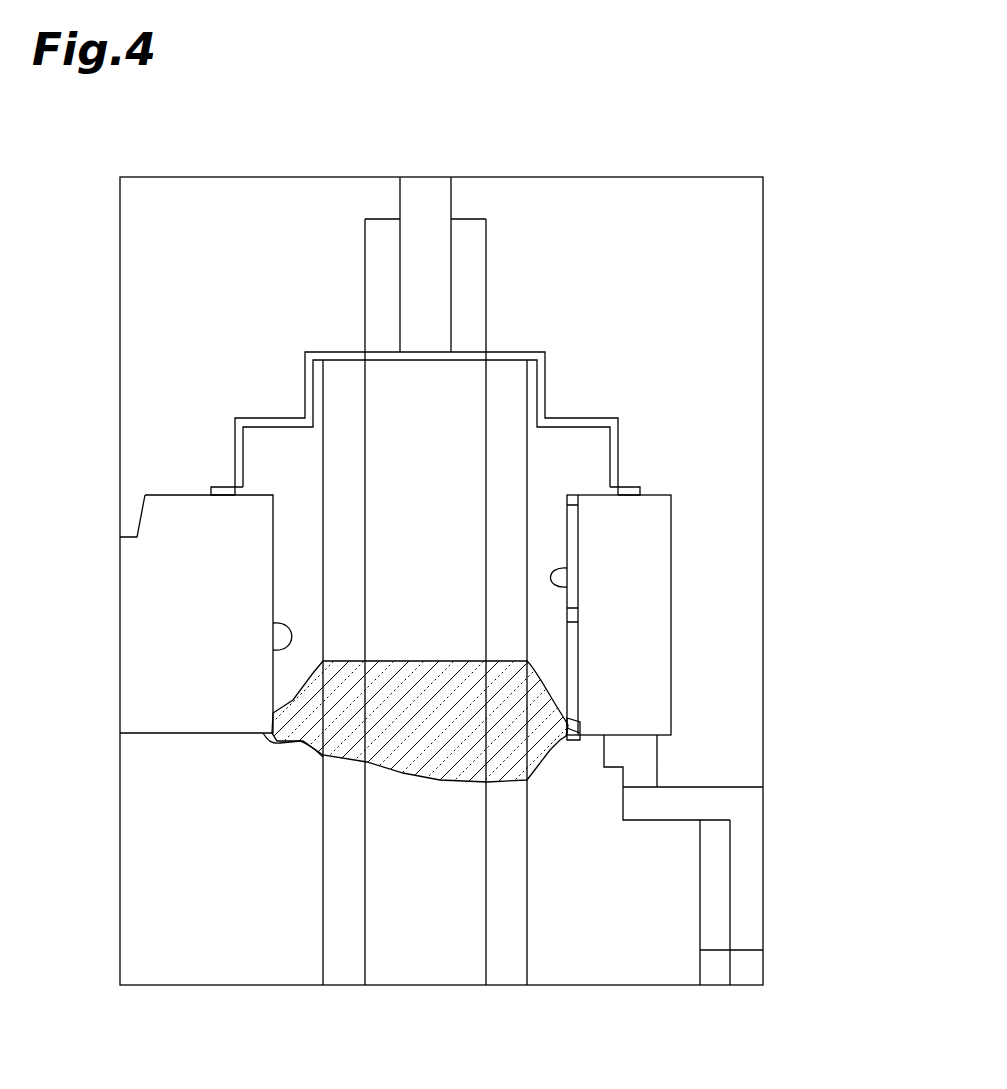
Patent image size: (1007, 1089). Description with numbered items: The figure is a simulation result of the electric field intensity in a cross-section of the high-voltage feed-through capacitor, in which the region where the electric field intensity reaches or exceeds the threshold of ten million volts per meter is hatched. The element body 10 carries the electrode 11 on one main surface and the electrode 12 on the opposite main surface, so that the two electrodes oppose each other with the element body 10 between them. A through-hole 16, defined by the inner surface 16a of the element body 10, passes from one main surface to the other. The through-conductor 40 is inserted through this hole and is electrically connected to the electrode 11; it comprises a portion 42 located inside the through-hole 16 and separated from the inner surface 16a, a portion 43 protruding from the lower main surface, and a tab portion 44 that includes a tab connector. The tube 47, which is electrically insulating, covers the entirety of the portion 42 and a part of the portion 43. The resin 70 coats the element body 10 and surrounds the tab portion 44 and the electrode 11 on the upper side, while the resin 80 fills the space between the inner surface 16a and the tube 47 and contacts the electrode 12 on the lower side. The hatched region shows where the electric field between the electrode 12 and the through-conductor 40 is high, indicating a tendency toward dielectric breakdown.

The resin 70 is at (227, 295).
The resin 80 is at (243, 823).
The through-conductor 40 is at (900, 313).
The tab portion 44 is at (432, 199).
The portion 42 is at (428, 540).
The element body 10 is at (630, 635).
The electrode 11 is at (578, 503).
The inner surface 16a is at (272, 652).
The through-hole 16 is at (549, 715).
The electrode 12 is at (580, 728).
The portion 43 is at (428, 815).
The tube 47 is at (512, 928).